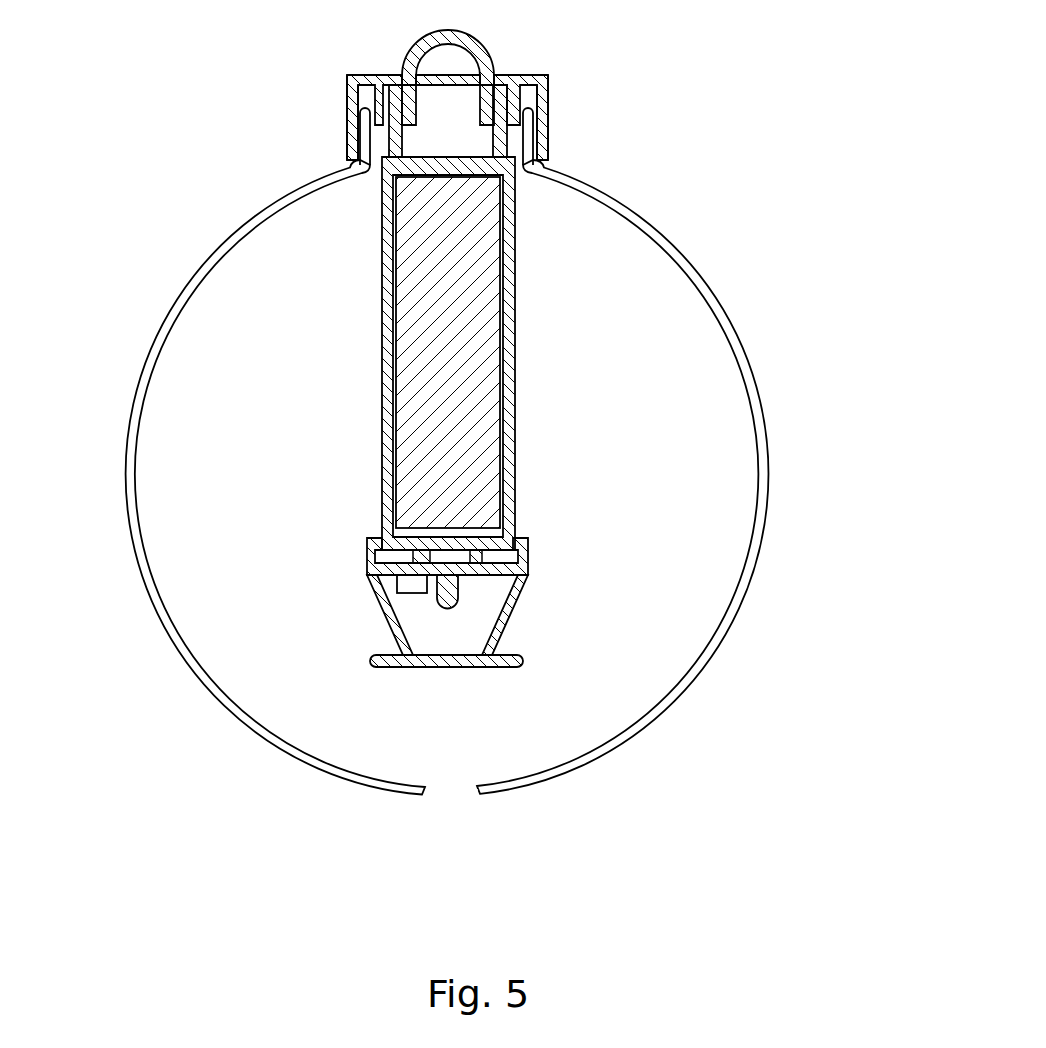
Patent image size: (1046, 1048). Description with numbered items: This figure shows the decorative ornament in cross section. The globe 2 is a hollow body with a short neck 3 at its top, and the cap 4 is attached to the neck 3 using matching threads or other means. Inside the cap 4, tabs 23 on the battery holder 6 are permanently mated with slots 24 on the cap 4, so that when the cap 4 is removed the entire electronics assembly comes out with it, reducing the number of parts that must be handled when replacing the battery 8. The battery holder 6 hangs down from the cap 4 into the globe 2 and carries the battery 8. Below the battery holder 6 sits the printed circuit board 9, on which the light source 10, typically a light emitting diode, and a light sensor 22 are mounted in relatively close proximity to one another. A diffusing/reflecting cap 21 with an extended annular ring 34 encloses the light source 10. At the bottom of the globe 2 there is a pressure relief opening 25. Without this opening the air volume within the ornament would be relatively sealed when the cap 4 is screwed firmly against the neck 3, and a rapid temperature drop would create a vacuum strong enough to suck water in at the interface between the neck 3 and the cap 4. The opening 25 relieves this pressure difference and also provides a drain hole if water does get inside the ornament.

The globe 2 is at (768, 490).
The neck 3 is at (532, 135).
The cap 4 is at (550, 150).
The battery holder 6 is at (515, 362).
The battery 8 is at (472, 455).
The printed circuit board 9 is at (515, 570).
The light source 10 is at (458, 600).
The diffusing/reflecting cap 21 is at (502, 635).
The light sensor 22 is at (408, 590).
The tabs 23 is at (390, 130).
The slots 24 is at (383, 90).
The pressure relief opening 25 is at (443, 792).
The extended annular ring 34 is at (383, 663).